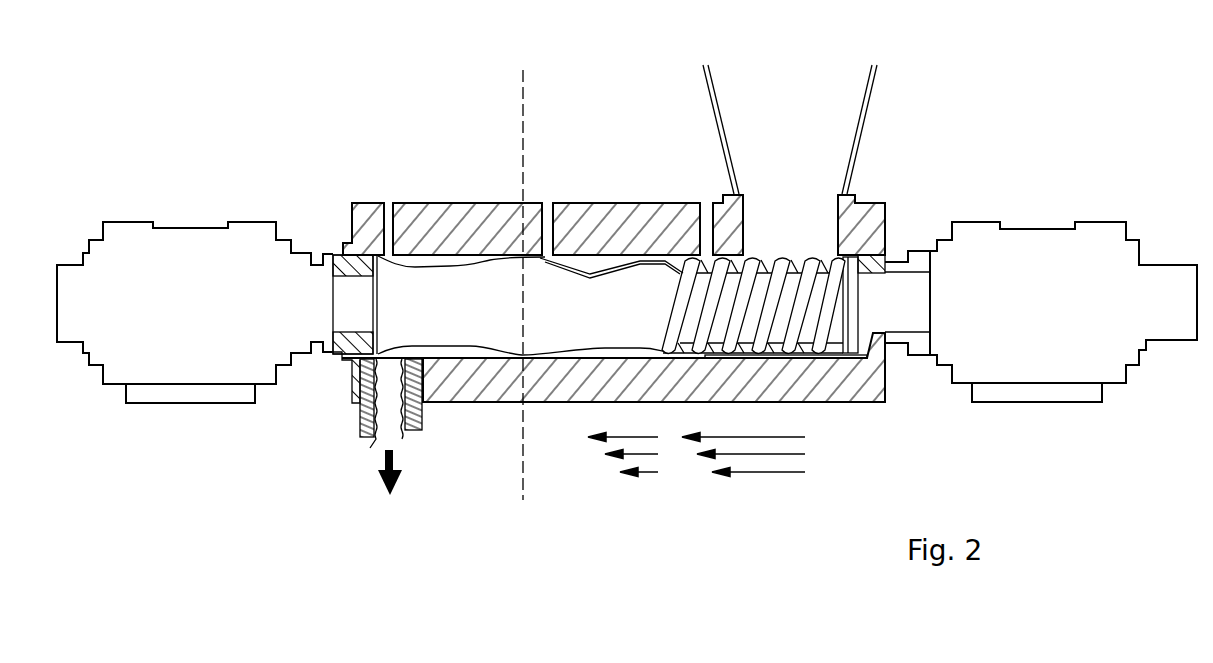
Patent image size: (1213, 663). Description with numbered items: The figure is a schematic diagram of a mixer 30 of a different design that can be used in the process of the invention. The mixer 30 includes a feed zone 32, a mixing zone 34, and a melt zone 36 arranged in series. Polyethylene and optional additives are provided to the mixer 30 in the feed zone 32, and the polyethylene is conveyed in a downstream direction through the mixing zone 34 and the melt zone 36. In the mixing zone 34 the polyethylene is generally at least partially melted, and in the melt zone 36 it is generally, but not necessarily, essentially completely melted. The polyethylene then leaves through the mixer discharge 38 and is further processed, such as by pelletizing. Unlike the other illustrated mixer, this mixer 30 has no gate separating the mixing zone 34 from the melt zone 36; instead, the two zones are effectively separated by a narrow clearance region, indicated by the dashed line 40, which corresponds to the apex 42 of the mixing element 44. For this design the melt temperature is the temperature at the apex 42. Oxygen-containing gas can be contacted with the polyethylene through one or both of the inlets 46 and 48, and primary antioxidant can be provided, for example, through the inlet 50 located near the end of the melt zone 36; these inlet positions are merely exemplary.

The mixer 30 is at (966, 94).
The feed zone 32 is at (808, 79).
The mixing zone 34 is at (857, 495).
The melt zone 36 is at (523, 493).
The mixer discharge 38 is at (373, 442).
The dashed line 40 is at (524, 95).
The apex 42 is at (520, 353).
The mixing element 44 is at (590, 273).
The inlet 46 is at (707, 205).
The inlet 48 is at (548, 210).
The inlet 50 is at (388, 205).